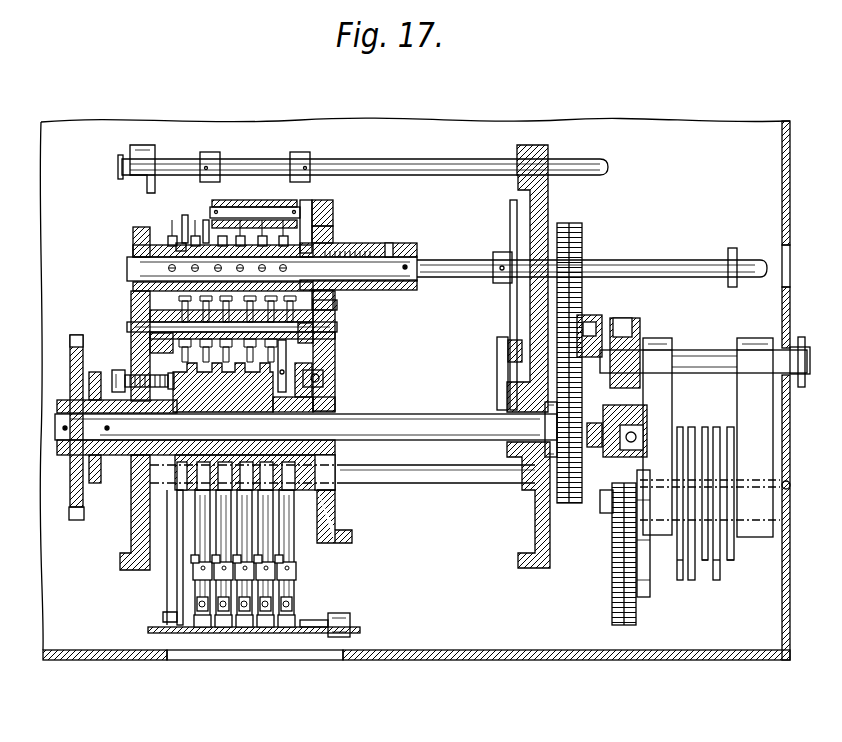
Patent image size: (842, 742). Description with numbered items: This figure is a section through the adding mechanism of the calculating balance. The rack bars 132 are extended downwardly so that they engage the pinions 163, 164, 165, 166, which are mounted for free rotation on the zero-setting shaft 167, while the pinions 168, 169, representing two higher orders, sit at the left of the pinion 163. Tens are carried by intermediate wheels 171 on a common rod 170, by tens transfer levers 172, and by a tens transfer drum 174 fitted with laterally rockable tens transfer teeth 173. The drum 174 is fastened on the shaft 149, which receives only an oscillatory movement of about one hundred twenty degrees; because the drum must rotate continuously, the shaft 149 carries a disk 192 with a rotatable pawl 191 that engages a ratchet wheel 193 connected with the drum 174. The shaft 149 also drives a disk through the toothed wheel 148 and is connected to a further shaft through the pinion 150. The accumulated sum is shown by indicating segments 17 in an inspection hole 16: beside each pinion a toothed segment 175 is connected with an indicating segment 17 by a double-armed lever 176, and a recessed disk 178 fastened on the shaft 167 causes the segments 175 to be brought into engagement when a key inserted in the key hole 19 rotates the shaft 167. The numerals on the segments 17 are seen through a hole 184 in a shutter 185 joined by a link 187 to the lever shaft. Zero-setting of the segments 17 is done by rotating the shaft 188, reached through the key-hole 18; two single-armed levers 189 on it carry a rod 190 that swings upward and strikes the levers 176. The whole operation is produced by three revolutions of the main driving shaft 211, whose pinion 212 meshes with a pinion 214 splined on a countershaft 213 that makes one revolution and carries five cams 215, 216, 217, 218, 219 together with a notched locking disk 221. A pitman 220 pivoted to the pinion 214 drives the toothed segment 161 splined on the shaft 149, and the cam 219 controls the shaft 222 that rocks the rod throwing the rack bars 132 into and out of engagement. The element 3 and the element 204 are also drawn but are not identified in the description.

The frame side wall 3 is at (787, 437).
The inspection hole 16 is at (198, 657).
The indicating segments 17 is at (220, 627).
The key-hole 18 is at (787, 485).
The key hole 19 is at (782, 253).
The rack bars 132 is at (290, 200).
The toothed wheel 148 is at (102, 470).
The shaft 149 is at (455, 418).
The pinion 150 is at (73, 475).
The toothed segment 161 is at (578, 239).
The pinion 163 is at (222, 243).
The pinion 164 is at (303, 220).
The pinion 165 is at (333, 210).
The pinion 166 is at (333, 226).
The zero-setting shaft 167 is at (335, 245).
The pinion 168 is at (210, 237).
The pinion 169 is at (180, 247).
The common rod 170 is at (337, 327).
The intermediate wheels 171 is at (175, 312).
The tens transfer levers 172 is at (337, 306).
The tens transfer teeth 173 is at (318, 353).
The tens transfer drum 174 is at (177, 372).
The toothed segment 175 is at (182, 222).
The double-armed lever 176 is at (212, 585).
The disk 178 is at (510, 231).
The hole 184 is at (283, 630).
The shutter 185 is at (322, 628).
The link 187 is at (172, 607).
The shaft 188 is at (383, 477).
The single-armed levers 189 is at (200, 547).
The rod 190 is at (200, 567).
The rotatable pawl 191 is at (312, 375).
The disk 192 is at (338, 405).
The ratchet wheel 193 is at (317, 393).
The brackets 204 is at (297, 170).
The shaft 211 is at (722, 357).
The pinion 212 is at (632, 340).
The countershaft 213 is at (603, 510).
The pinion 214 is at (617, 583).
The cam 215 is at (678, 573).
The cam 216 is at (693, 432).
The cam 217 is at (707, 577).
The cam 218 is at (720, 577).
The cam 219 is at (733, 567).
The pitman 220 is at (603, 362).
The locking disk 221 is at (643, 580).
The shaft 222 is at (470, 165).